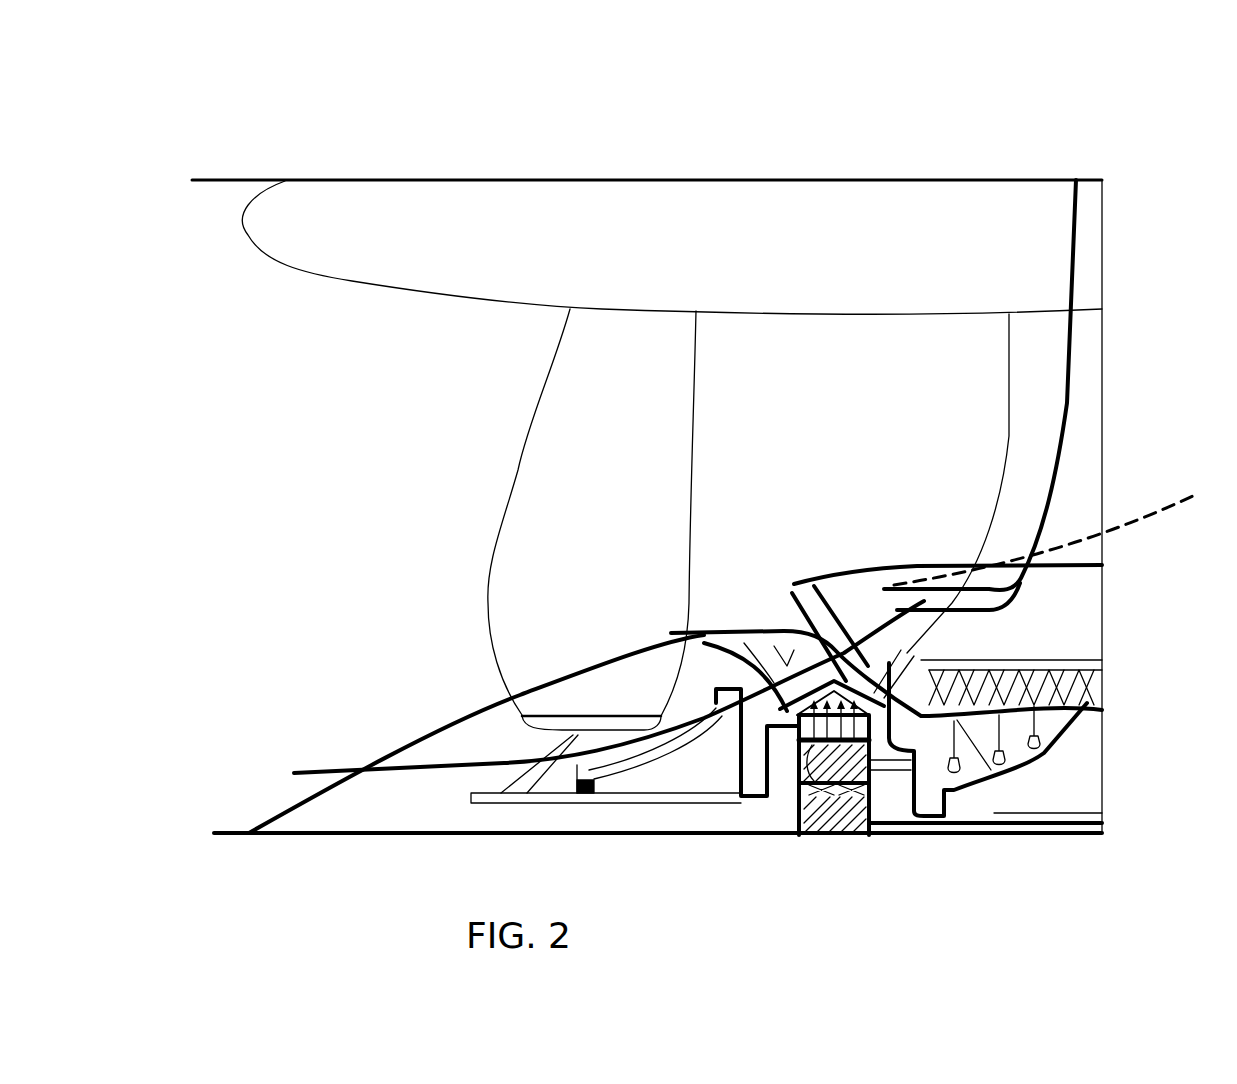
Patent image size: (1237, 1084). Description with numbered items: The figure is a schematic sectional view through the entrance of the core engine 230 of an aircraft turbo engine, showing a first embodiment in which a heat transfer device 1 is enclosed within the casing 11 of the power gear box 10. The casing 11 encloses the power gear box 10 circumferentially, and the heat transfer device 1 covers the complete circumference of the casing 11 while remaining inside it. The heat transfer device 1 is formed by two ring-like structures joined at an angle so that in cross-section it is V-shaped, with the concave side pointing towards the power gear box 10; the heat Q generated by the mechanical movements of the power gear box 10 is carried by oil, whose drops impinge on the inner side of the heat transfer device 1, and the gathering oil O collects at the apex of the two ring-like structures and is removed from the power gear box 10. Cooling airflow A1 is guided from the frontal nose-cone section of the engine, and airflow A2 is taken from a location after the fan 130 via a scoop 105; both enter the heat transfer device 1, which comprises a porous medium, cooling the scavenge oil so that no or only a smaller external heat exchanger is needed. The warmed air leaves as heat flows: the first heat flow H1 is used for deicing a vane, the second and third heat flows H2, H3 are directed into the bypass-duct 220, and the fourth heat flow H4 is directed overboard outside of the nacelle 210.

The nacelle 210 is at (848, 176).
The fan 130 is at (546, 493).
The scoop 105 is at (690, 601).
The bypass-duct 220 is at (857, 432).
The core engine 230 is at (880, 562).
The casing 11 is at (752, 643).
The heat transfer device 1 is at (790, 725).
The power gear box 10 is at (845, 812).
The heat Q is at (817, 790).
The first heat flow H1 is at (792, 615).
The second heat flow H2 is at (870, 556).
The third heat flow H3 is at (998, 541).
The fourth heat flow H4 is at (1071, 173).
The gathering oil O is at (1056, 525).
The airflow A1 is at (287, 770).
The airflow A2 is at (667, 630).